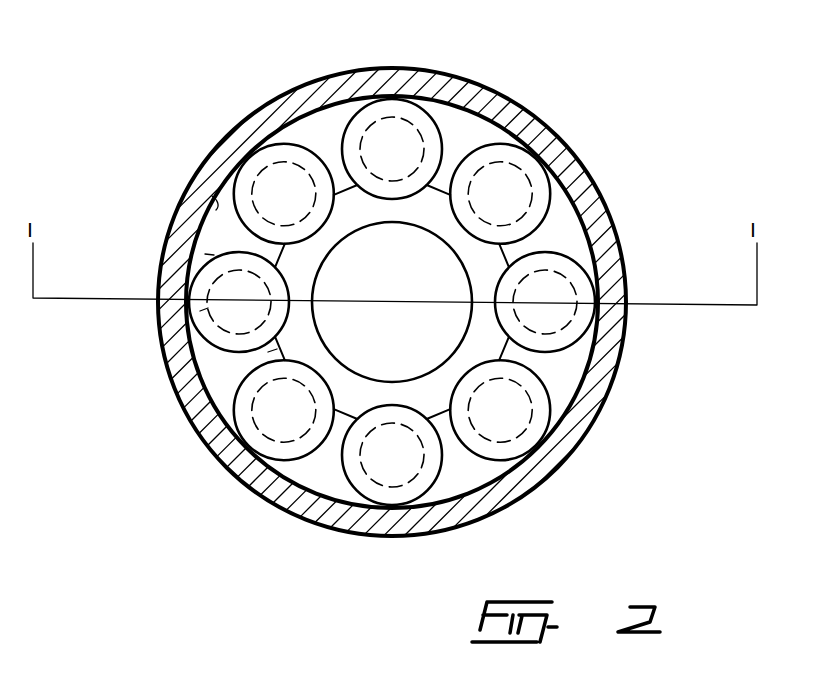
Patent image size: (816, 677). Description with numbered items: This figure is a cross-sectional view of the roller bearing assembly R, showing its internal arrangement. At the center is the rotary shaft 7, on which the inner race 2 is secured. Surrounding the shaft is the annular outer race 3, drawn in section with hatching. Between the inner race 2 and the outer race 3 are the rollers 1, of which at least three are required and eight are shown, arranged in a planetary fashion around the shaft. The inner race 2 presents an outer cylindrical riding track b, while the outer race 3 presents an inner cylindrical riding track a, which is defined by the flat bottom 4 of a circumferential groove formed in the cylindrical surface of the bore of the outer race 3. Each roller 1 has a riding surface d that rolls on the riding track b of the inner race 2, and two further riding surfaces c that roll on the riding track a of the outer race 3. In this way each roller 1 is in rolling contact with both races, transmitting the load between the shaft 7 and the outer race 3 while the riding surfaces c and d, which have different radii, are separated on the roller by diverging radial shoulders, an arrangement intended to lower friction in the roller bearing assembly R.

The rollers 1 is at (396, 118).
The inner race 2 is at (500, 358).
The outer race 3 is at (610, 266).
The flat bottom 4 is at (597, 334).
The rotary shaft 7 is at (441, 272).
The roller bearing assembly R is at (640, 90).
The inner cylindrical riding track a is at (212, 196).
The outer cylindrical riding track b is at (268, 352).
The riding surfaces c is at (205, 254).
The riding surface d is at (200, 311).